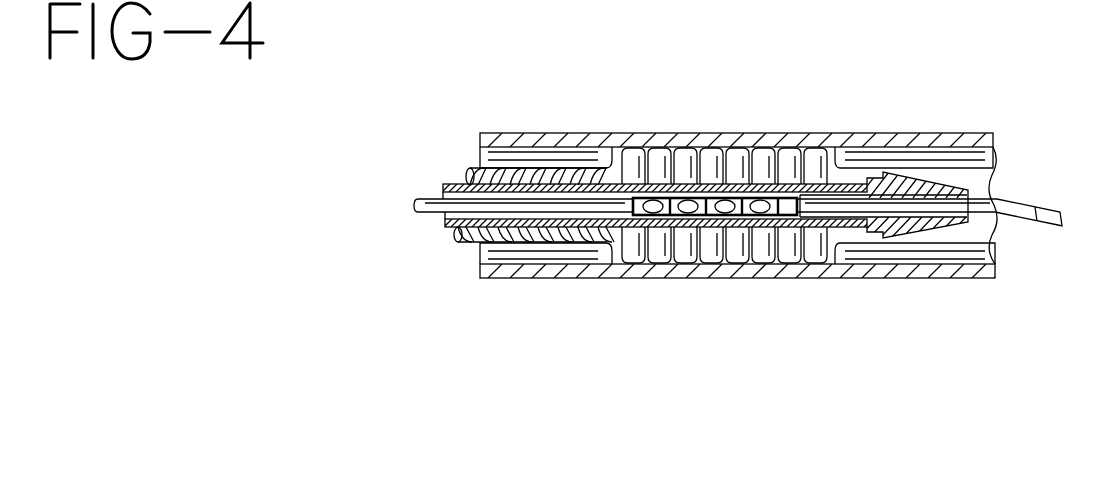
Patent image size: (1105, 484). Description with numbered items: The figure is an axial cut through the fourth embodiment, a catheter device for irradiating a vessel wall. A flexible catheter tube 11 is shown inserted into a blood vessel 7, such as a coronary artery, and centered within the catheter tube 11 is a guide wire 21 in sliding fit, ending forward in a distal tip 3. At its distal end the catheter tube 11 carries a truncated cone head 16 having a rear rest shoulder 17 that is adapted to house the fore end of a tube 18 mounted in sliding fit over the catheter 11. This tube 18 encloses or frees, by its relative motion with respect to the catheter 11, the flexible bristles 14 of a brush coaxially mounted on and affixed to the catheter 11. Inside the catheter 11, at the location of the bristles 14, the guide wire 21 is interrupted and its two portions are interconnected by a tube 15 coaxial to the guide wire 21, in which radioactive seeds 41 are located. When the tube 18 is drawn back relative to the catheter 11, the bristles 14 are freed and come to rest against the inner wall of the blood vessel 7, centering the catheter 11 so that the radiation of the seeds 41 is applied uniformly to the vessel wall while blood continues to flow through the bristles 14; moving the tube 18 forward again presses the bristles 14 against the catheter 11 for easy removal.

The distal tip 3 is at (1033, 202).
The blood vessel 7 is at (571, 268).
The flexible catheter tube 11 is at (846, 170).
The flexible bristles 14 is at (638, 170).
The tube 15 is at (790, 212).
The truncated cone head 16 is at (918, 235).
The rear rest shoulder 17 is at (870, 172).
The tube 18 is at (528, 170).
The guide wire 21 is at (857, 205).
The radioactive seeds 41 is at (691, 210).